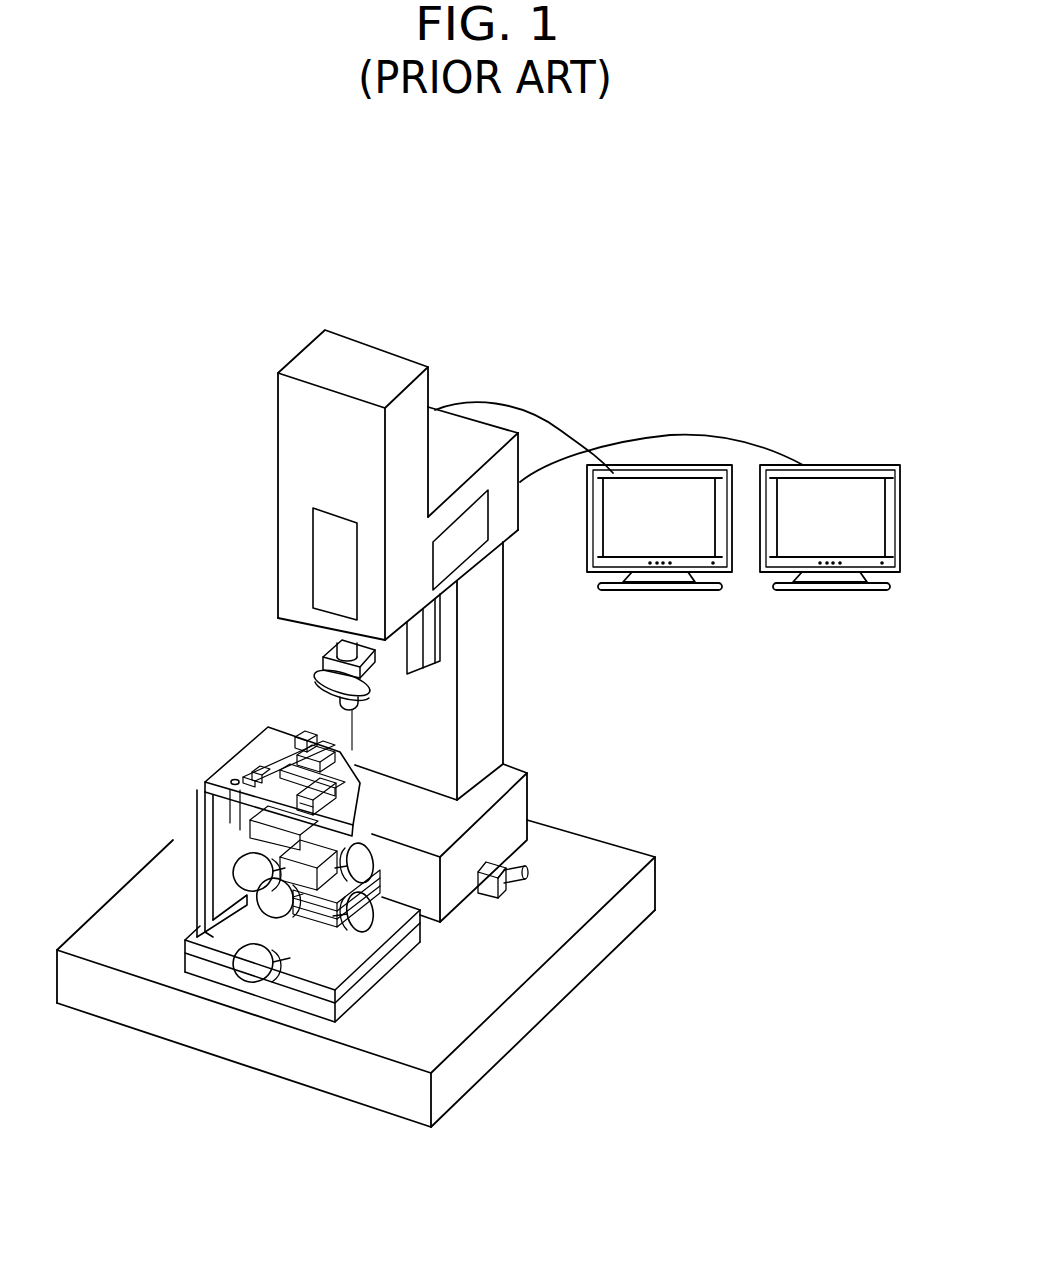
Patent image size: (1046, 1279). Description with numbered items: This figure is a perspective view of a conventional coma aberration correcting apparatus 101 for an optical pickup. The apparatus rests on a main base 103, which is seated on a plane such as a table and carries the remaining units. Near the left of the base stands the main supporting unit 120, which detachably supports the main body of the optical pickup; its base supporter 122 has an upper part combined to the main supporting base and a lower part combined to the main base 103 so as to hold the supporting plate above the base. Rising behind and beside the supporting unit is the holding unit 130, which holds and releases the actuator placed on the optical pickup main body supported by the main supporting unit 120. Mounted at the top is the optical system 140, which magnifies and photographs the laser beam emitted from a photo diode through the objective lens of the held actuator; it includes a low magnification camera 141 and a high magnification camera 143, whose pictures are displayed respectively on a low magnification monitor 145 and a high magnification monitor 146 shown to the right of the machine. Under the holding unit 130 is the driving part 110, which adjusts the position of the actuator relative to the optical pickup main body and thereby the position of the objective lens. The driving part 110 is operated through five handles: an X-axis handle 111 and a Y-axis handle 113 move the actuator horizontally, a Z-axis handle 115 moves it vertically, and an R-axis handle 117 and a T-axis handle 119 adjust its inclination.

The coma aberration correcting apparatus 101 is at (268, 335).
The main base 103 is at (162, 853).
The driving part 110 is at (375, 1166).
The X-axis handle 111 is at (360, 915).
The Y-axis handle 113 is at (257, 880).
The Z-axis handle 115 is at (275, 898).
The R-axis handle 117 is at (252, 975).
The T-axis handle 119 is at (360, 865).
The main supporting unit 120 is at (224, 738).
The base supporter 122 is at (197, 800).
The holding unit 130 is at (368, 826).
The optical system 140 is at (280, 445).
The low magnification camera 141 is at (328, 556).
The high magnification camera 143 is at (472, 542).
The low magnification monitor 145 is at (657, 591).
The high magnification monitor 146 is at (833, 591).